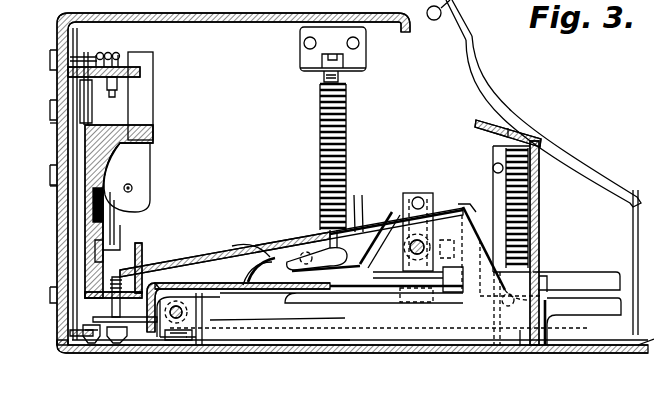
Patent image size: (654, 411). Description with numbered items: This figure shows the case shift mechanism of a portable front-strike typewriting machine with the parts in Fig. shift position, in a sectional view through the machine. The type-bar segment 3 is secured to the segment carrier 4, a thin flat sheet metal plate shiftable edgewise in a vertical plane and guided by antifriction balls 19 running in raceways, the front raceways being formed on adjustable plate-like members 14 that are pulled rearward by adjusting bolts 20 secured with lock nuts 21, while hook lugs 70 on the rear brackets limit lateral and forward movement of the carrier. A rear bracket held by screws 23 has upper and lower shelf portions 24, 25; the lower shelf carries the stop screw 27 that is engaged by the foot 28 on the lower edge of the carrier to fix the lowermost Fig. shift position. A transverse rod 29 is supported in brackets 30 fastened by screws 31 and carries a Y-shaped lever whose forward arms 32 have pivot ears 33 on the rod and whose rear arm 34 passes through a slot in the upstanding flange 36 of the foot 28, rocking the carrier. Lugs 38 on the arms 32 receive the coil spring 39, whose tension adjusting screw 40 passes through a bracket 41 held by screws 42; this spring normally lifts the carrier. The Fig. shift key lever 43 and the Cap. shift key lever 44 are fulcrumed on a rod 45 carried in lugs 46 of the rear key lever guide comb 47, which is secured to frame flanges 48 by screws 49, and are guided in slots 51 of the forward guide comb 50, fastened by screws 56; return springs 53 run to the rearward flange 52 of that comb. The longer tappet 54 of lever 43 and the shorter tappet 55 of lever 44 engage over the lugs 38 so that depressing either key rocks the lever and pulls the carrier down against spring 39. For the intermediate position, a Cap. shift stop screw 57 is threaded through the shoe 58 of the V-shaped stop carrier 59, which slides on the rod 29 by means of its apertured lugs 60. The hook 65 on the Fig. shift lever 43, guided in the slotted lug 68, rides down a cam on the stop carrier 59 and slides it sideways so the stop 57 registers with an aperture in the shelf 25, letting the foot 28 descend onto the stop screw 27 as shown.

The segment 3 is at (153, 118).
The segment carrier 4 is at (150, 150).
The plate-like member 14 is at (115, 222).
The antifriction ball 19 is at (153, 100).
The adjusting bolt 20 is at (57, 186).
The lock nut 21 is at (57, 128).
The screw 23 is at (56, 47).
The shelf portion 24 is at (142, 70).
The shelf portion 25 is at (90, 346).
The stop screw 27 is at (116, 346).
The foot 28 is at (144, 260).
The rod 29 is at (408, 252).
The bracket 30 is at (403, 197).
The screw 31 is at (418, 197).
The arm 32 is at (262, 248).
The pivot ear 33 is at (395, 240).
The arm 34 is at (232, 246).
The upstanding flange 36 is at (144, 243).
The lug 38 is at (357, 195).
The coil spring 39 is at (320, 137).
The tension adjusting screw 40 is at (340, 78).
The bracket 41 is at (300, 66).
The screw 42 is at (330, 44).
The Fig. shift key lever 43 is at (515, 353).
The Cap. shift key lever 44 is at (590, 275).
The rod 45 is at (203, 312).
The lug 46 is at (200, 345).
The rear key lever guide comb 47 is at (250, 320).
The flange 48 is at (302, 345).
The screw 49 is at (180, 348).
The forward guide comb 50 is at (541, 214).
The guide slot 51 is at (556, 272).
The flange 52 is at (478, 124).
The return spring 53 is at (493, 150).
The tappet 54 is at (296, 256).
The tappet 55 is at (333, 242).
The screw 56 is at (493, 168).
The Cap. shift stop screw 57 is at (147, 345).
The shoe 58 is at (196, 283).
The stop carrier 59 is at (247, 258).
The lug 60 is at (403, 274).
The hook 65 is at (492, 262).
The lug 68 is at (450, 206).
The hook lug 70 is at (96, 55).